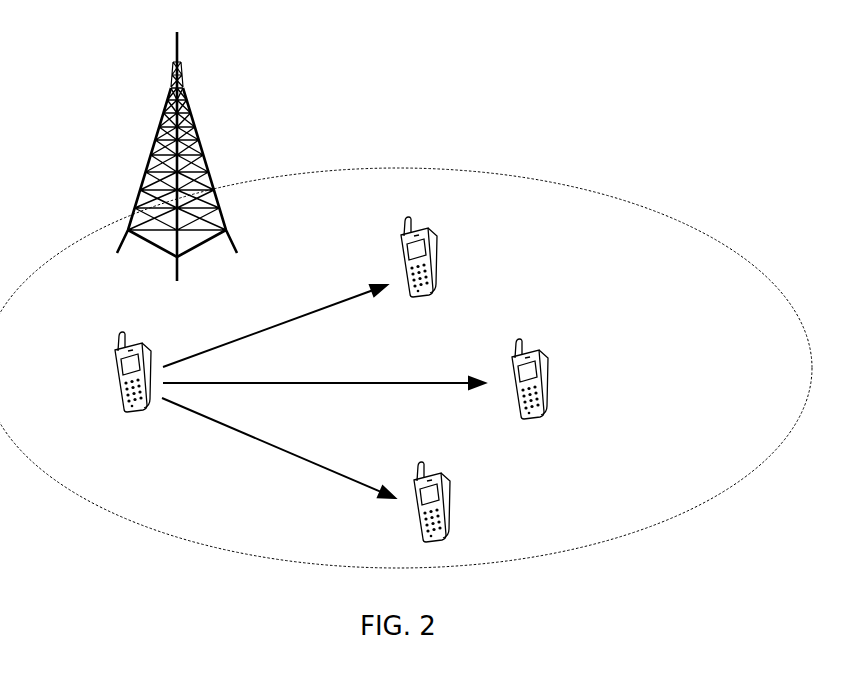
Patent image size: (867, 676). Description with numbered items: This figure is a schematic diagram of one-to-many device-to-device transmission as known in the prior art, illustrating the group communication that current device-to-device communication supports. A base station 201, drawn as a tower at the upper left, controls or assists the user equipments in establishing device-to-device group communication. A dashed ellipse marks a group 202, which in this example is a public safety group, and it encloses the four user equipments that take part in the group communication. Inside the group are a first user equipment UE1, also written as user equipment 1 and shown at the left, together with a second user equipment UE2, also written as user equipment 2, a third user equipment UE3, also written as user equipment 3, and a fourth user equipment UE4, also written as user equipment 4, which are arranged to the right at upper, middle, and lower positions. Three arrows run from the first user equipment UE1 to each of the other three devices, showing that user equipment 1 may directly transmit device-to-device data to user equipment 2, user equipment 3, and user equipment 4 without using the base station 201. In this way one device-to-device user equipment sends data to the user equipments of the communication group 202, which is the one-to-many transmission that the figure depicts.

The base station 201 is at (165, 156).
The group 202 is at (406, 368).
The user equipment UE 1 UE1 is at (106, 372).
The user equipment UE 2 UE2 is at (445, 257).
The user equipment UE 3 UE3 is at (556, 379).
The user equipment UE 4 UE4 is at (457, 502).
The user equipment UE 1 is at (106, 372).
The user equipment UE 2 is at (445, 257).
The user equipment UE 3 is at (556, 379).
The user equipment UE 4 is at (457, 502).